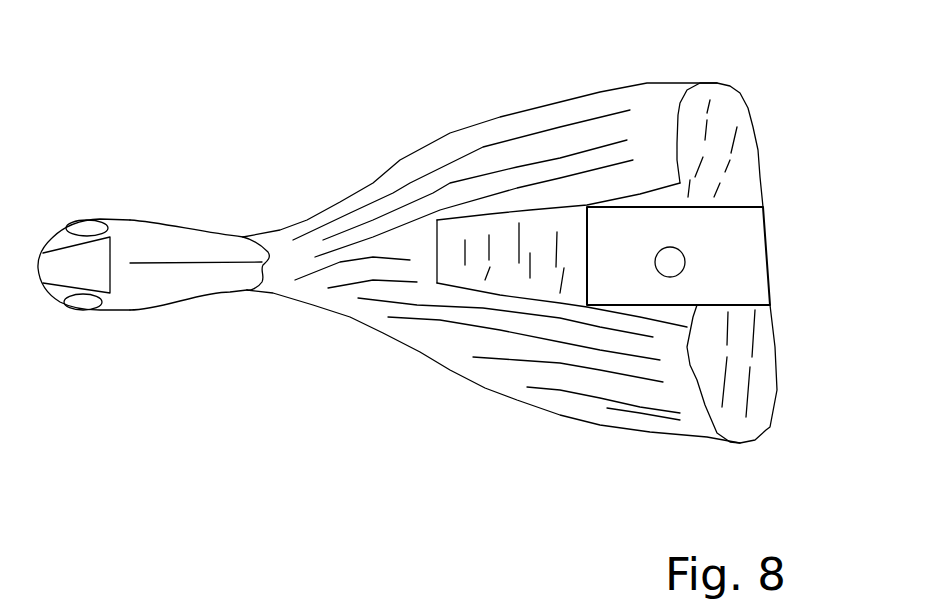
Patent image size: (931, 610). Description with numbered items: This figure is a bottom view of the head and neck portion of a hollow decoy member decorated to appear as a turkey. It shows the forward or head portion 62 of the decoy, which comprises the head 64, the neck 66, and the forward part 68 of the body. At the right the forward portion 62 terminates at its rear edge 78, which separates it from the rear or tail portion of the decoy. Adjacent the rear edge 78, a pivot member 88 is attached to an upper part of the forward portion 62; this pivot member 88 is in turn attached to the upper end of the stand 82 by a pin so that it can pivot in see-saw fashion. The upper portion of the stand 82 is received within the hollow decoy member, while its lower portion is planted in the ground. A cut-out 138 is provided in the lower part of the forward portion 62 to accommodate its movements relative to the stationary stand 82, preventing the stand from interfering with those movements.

The forward or head portion 62 is at (490, 100).
The head 64 is at (58, 237).
The neck 66 is at (233, 240).
The forward part of the body 68 is at (453, 358).
The rear edge of the forward portion 78 is at (748, 120).
The stand 82 is at (677, 260).
The pivot member 88 is at (737, 252).
The cut-out 138 is at (530, 210).